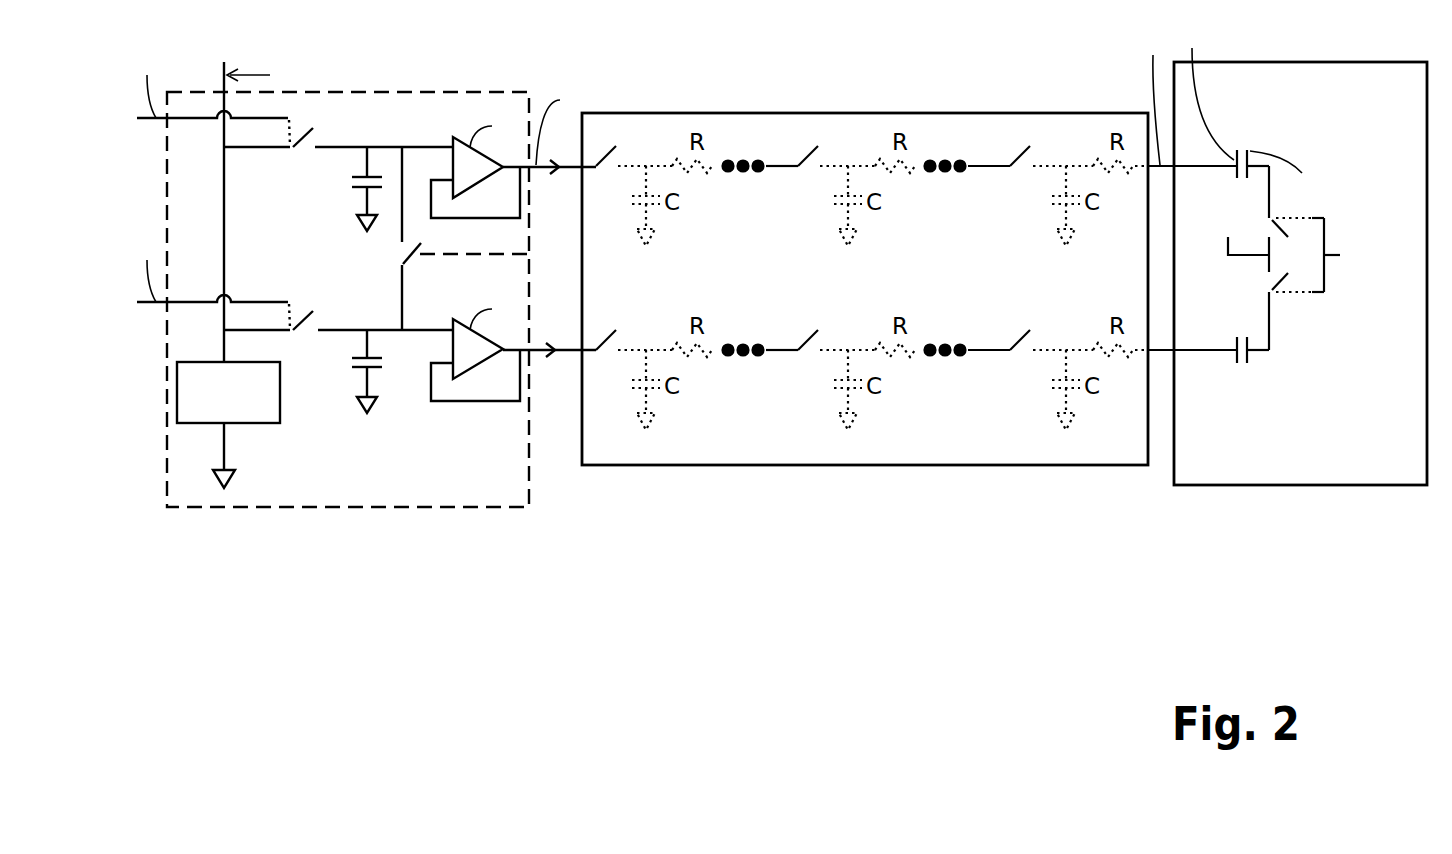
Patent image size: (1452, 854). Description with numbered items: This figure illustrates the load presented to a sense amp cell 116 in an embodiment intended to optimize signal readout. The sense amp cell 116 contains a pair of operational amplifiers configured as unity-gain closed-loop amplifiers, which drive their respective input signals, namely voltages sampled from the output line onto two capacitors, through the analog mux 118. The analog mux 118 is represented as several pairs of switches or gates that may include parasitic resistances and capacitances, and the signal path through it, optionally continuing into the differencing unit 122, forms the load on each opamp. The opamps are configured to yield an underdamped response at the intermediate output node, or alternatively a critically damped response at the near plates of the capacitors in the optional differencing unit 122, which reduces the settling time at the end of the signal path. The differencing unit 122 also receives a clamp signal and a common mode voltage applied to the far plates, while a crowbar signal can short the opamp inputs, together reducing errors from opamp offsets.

The sense amp cell 116 is at (430, 92).
The analog mux 118 is at (904, 350).
The differencing unit 122 is at (1356, 62).